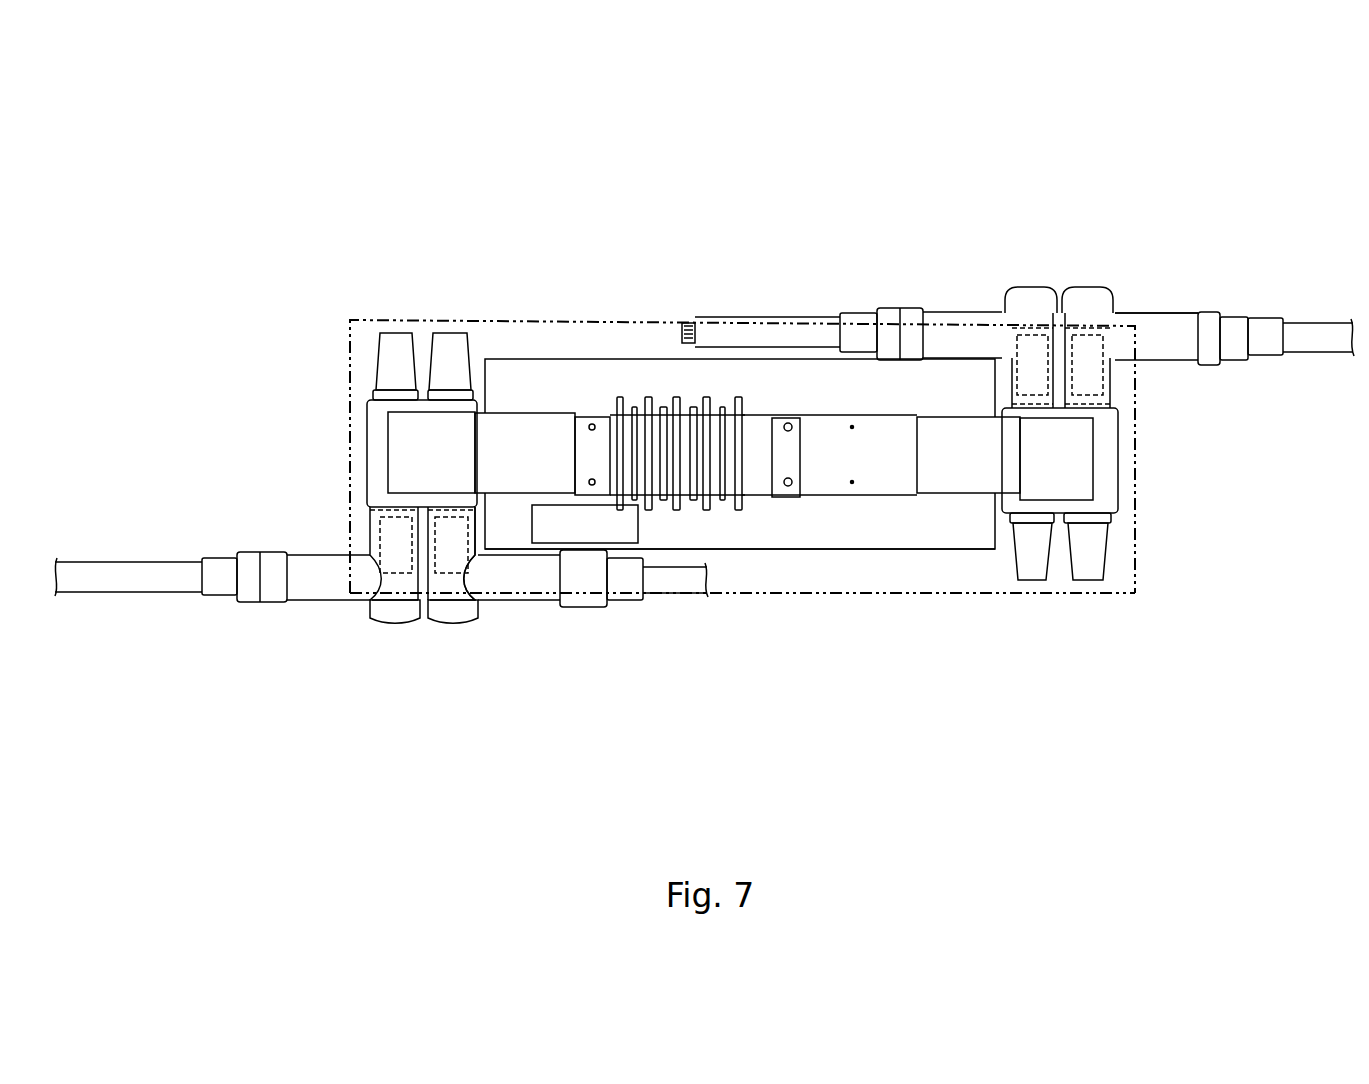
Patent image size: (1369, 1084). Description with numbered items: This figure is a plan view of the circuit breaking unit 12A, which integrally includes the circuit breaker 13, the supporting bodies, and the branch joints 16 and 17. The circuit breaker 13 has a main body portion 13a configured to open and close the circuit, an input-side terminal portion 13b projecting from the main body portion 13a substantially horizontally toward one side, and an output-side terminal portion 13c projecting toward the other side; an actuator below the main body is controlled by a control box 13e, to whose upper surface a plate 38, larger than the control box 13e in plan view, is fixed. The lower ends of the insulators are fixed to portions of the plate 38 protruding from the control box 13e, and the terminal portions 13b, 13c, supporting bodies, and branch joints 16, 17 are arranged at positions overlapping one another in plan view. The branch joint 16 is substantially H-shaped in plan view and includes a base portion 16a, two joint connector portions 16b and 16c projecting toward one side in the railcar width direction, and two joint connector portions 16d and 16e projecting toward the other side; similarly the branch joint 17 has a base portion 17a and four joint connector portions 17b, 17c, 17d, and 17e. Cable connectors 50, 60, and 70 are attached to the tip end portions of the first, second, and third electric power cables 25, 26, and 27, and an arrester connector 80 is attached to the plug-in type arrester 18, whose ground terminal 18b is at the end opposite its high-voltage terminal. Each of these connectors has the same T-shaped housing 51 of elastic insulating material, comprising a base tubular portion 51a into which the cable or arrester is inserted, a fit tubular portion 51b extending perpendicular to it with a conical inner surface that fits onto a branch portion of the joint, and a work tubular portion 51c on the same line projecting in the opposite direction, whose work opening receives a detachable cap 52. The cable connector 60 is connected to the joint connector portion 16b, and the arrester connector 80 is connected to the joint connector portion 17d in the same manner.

The circuit breaking unit 12A is at (349, 218).
The circuit breaker 13 is at (760, 406).
The main body portion 13a is at (652, 397).
The input-side terminal portion 13b is at (527, 430).
The output-side terminal portion 13c is at (970, 440).
The control box 13e is at (770, 551).
The branch joint 16 is at (365, 428).
The base portion 16a is at (367, 458).
The joint connector portion 16b is at (440, 625).
The joint connector portion 16c is at (385, 530).
The joint connector portion 16d is at (401, 331).
The joint connector portion 16e is at (455, 331).
The branch joint 17 is at (1122, 470).
The base portion 17a is at (1118, 440).
The joint connector portion 17b is at (1090, 581).
The joint connector portion 17c is at (1030, 581).
The joint connector portion 17d is at (1033, 340).
The joint connector portion 17e is at (1086, 340).
The plug-in type arrester 18 is at (812, 319).
The ground terminal 18b is at (686, 324).
The first electric power cable 25 is at (115, 593).
The second electric power cable 26 is at (676, 595).
The third electric power cable 27 is at (1318, 321).
The plate 38 is at (872, 595).
The cable connector 50 is at (326, 603).
The housing 51 is at (270, 603).
The base tubular portion 51a is at (612, 602).
The fit tubular portion 51b is at (480, 525).
The work tubular portion 51c is at (410, 605).
The cap 52 is at (448, 627).
The cable connector 60 is at (520, 606).
The cable connector 70 is at (1166, 314).
The arrester connector 80 is at (983, 301).